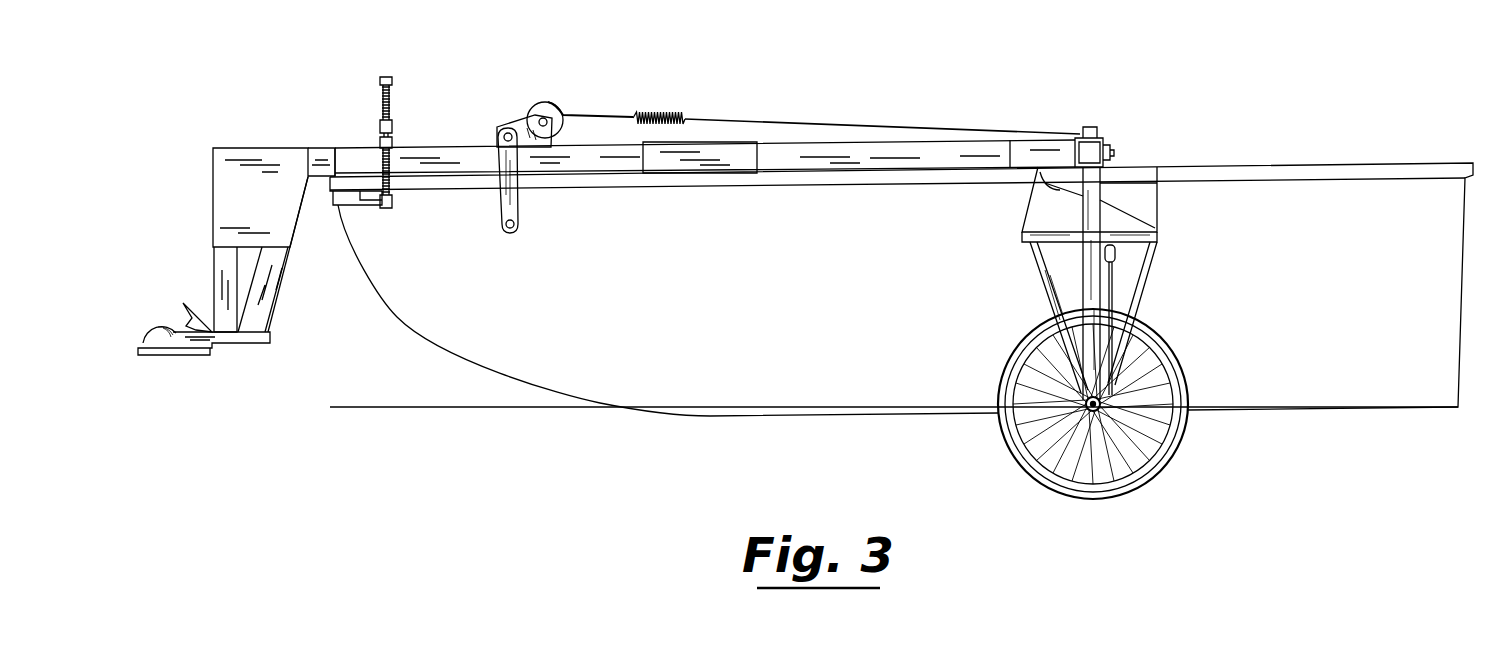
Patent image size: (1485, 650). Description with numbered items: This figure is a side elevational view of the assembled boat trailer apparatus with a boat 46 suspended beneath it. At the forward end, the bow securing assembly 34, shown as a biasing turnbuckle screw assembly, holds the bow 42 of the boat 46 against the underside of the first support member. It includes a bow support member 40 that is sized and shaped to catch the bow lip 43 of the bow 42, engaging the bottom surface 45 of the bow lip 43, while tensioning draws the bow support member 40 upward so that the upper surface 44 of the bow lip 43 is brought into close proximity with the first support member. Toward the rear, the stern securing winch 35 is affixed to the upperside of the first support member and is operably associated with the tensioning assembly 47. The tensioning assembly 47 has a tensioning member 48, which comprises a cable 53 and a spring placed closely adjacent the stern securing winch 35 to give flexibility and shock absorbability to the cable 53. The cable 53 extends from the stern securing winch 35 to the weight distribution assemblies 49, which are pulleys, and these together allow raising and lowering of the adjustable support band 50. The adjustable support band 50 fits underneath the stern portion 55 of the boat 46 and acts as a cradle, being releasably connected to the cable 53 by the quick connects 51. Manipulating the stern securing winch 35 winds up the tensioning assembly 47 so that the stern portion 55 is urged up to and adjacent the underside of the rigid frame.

The bow securing assembly 34 is at (390, 96).
The stern securing winch 35 is at (548, 100).
The bow support member 40 is at (340, 205).
The bow 42 is at (324, 186).
The bow lip 43 is at (329, 170).
The upper surface 44 is at (358, 173).
The bottom surface 45 is at (368, 200).
The boat 46 is at (883, 395).
The tensioning assembly 47 is at (600, 113).
The tensioning member 48 is at (665, 112).
The weight distribution assemblies 49 is at (1097, 135).
The adjustable support band 50 is at (1113, 300).
The quick connects 51 is at (1118, 255).
The cable 53 is at (946, 125).
The stern portion 55 is at (1423, 408).